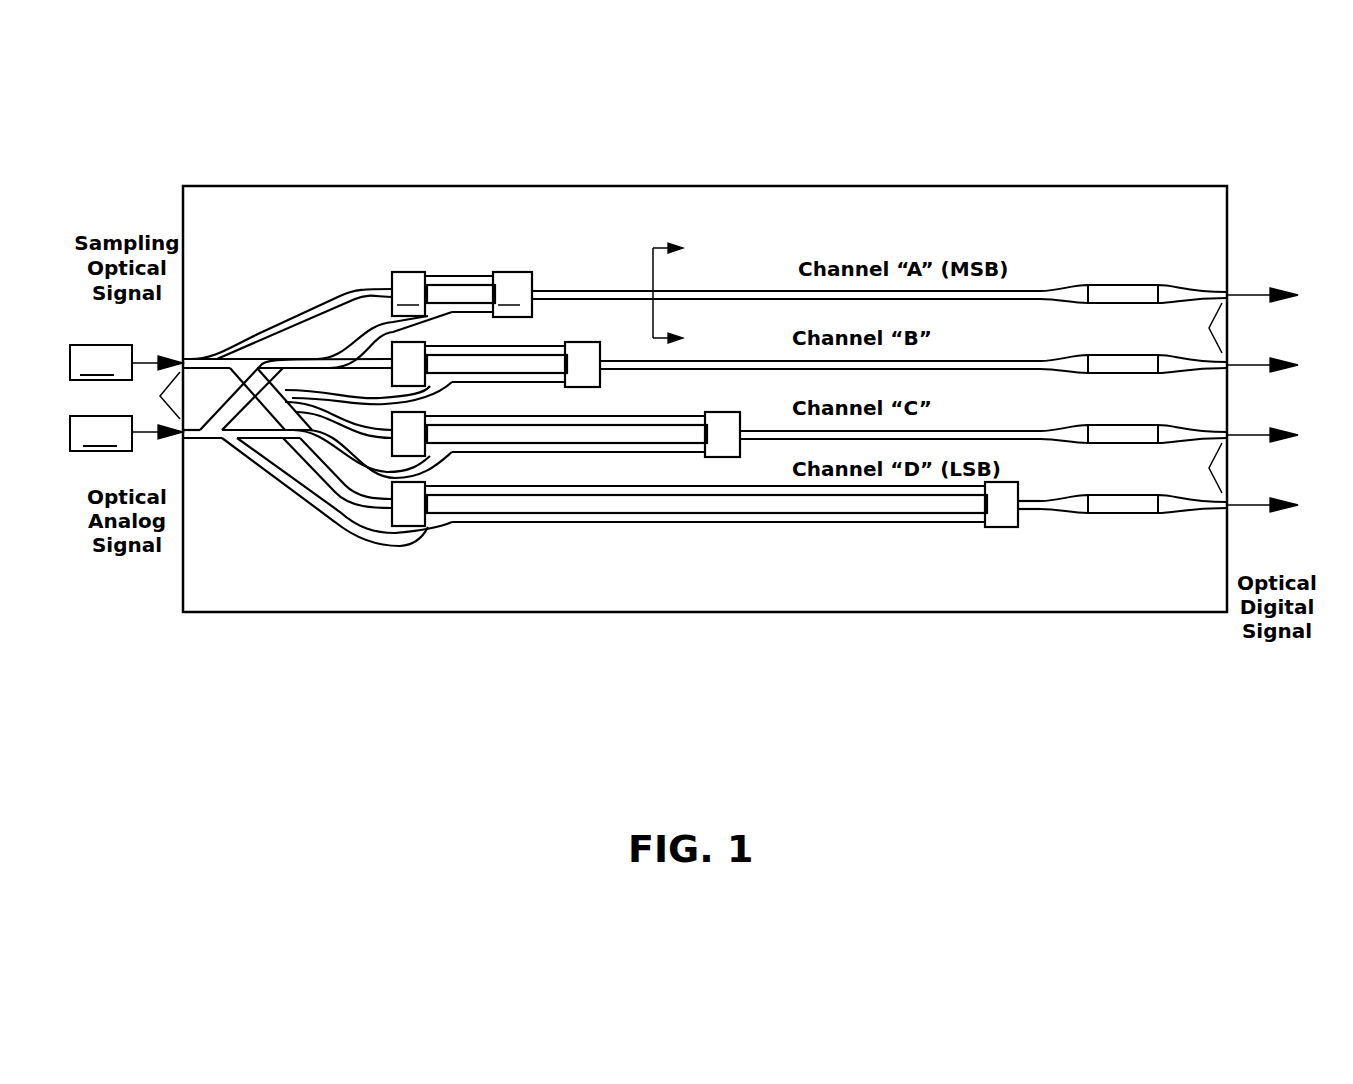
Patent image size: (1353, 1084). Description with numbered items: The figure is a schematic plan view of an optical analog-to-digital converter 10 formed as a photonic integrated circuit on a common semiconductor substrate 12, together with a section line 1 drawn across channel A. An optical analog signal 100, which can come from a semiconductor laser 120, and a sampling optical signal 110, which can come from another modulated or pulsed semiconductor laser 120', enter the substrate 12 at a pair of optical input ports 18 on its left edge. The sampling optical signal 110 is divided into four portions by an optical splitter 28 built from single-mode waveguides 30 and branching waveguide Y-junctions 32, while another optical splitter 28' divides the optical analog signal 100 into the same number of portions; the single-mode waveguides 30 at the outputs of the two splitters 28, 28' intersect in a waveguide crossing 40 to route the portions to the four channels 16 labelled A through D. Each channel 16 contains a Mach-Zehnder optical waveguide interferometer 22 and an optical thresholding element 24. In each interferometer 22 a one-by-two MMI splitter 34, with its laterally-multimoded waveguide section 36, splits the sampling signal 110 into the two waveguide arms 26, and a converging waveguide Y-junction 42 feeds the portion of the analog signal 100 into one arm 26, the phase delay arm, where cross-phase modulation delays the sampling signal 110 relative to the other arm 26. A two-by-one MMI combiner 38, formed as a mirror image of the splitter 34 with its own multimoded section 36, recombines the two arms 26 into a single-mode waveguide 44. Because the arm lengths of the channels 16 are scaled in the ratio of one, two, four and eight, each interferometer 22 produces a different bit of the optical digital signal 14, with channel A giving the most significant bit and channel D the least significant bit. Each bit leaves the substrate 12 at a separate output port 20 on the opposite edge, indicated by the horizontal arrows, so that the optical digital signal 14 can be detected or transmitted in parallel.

The optical analog-to-digital converter 10 is at (1035, 624).
The semiconductor substrate 12 is at (244, 578).
The optical digital signal 14 is at (1263, 519).
The channel 16 is at (760, 274).
The optical input ports 18 is at (157, 395).
The output port 20 is at (1198, 398).
The optical waveguide interferometer 22 is at (462, 257).
The optical thresholding element 24 is at (1124, 284).
The waveguide arms 26 is at (461, 270).
The optical splitter 28 is at (291, 324).
The optical splitter 28' is at (328, 492).
The single-mode waveguides 30 is at (284, 326).
The branching waveguide Y-junction 32 is at (212, 358).
The 1×2 MMI splitter 34 is at (388, 269).
The laterally-multimoded waveguide section 36 is at (460, 294).
The 2×1 MMI combiner 38 is at (537, 268).
The waveguide crossing 40 is at (242, 391).
The converging waveguide Y-junction 42 is at (450, 313).
The single-mode waveguide 44 is at (608, 286).
The optical analog signal 100 is at (146, 439).
The sampling optical signal 110 is at (143, 356).
The semiconductor laser 120 is at (101, 433).
The semiconductor laser 120' is at (101, 362).
The section line 1- 1 is at (676, 294).